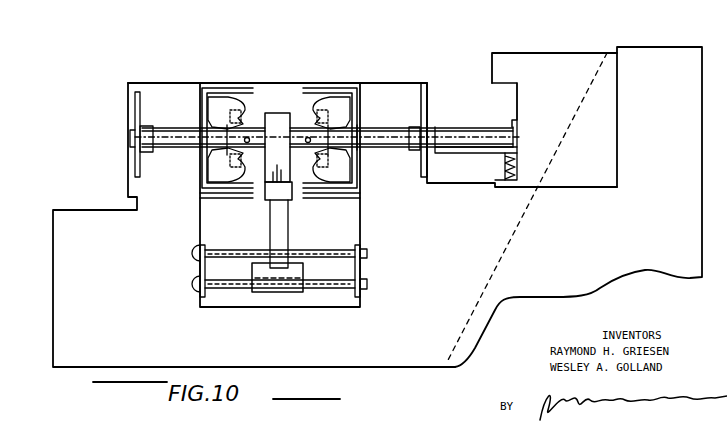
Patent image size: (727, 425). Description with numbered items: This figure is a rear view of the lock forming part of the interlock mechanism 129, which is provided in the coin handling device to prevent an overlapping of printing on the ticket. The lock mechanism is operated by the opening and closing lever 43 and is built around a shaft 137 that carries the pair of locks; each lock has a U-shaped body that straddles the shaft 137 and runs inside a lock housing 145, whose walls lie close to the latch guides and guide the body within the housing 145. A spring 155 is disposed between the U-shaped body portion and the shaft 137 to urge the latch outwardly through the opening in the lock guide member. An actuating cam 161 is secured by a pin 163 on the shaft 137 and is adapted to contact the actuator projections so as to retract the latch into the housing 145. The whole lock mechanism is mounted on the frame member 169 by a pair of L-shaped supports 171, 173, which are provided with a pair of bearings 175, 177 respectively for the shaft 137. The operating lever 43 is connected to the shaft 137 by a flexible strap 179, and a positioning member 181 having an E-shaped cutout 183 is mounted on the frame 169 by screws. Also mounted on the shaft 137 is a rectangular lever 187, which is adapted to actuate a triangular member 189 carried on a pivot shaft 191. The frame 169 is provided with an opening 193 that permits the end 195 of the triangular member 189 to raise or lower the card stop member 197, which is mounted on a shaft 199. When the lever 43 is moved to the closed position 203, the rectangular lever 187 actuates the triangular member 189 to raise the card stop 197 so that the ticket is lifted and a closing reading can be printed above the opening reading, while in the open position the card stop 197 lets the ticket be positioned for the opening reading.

The opening and closing lever 43 is at (516, 170).
The interlock mechanism 129 is at (167, 80).
The shaft 137 is at (420, 122).
The lock housing 145 is at (237, 95).
The spring 155 is at (360, 128).
The actuating cam 161 is at (312, 160).
The pin 163 is at (308, 137).
The frame member 169 is at (91, 216).
The L shaped support 171 is at (135, 111).
The L shaped support 173 is at (428, 100).
The bearing 175 is at (146, 158).
The bearing 177 is at (413, 150).
The flexible strap 179 is at (462, 152).
The positioning member 181 is at (579, 60).
The E shaped cutout 183 is at (512, 102).
The rectangular lever 187 is at (265, 195).
The triangular member 189 is at (290, 232).
The pivot shaft 191 is at (352, 246).
The opening 193 is at (200, 233).
The end 195 is at (278, 262).
The card stop member 197 is at (259, 291).
The shaft 199 is at (337, 294).
The closed position 203 is at (503, 85).